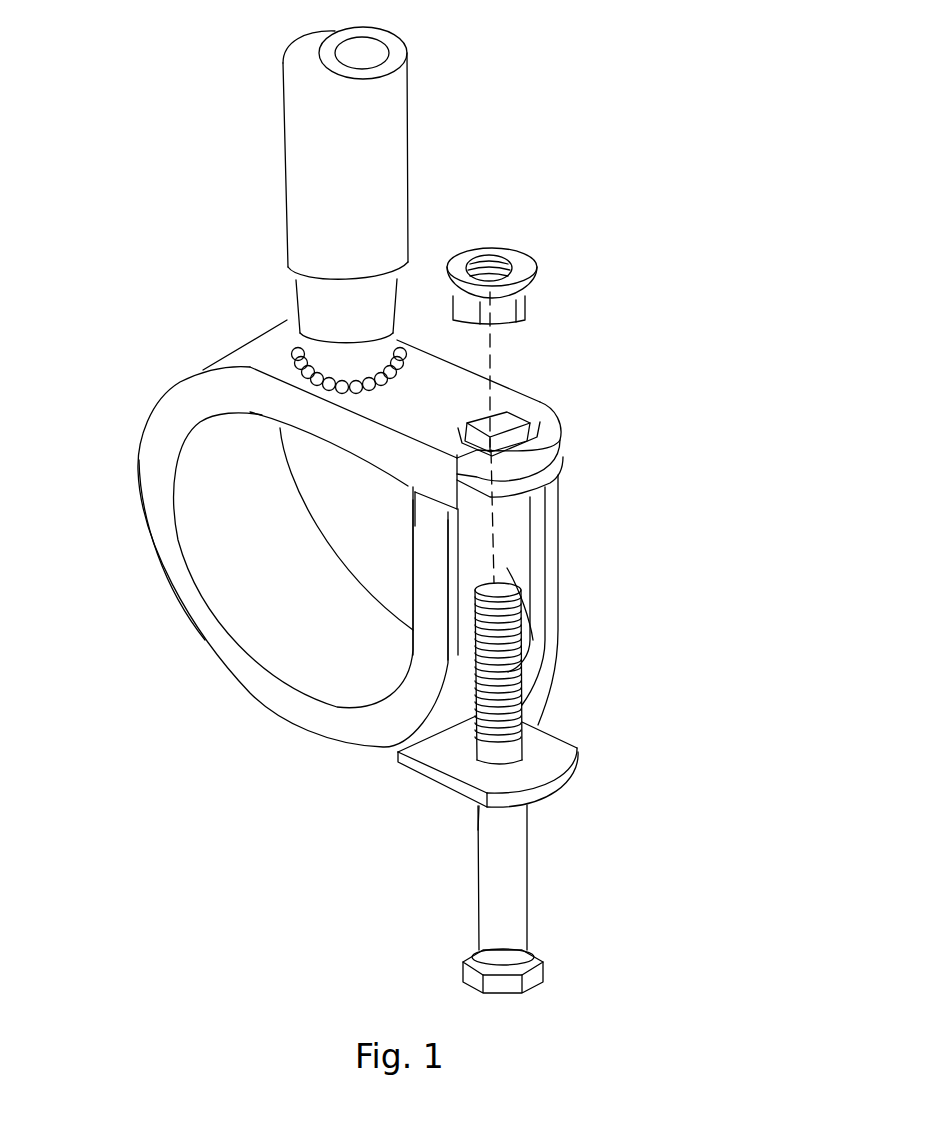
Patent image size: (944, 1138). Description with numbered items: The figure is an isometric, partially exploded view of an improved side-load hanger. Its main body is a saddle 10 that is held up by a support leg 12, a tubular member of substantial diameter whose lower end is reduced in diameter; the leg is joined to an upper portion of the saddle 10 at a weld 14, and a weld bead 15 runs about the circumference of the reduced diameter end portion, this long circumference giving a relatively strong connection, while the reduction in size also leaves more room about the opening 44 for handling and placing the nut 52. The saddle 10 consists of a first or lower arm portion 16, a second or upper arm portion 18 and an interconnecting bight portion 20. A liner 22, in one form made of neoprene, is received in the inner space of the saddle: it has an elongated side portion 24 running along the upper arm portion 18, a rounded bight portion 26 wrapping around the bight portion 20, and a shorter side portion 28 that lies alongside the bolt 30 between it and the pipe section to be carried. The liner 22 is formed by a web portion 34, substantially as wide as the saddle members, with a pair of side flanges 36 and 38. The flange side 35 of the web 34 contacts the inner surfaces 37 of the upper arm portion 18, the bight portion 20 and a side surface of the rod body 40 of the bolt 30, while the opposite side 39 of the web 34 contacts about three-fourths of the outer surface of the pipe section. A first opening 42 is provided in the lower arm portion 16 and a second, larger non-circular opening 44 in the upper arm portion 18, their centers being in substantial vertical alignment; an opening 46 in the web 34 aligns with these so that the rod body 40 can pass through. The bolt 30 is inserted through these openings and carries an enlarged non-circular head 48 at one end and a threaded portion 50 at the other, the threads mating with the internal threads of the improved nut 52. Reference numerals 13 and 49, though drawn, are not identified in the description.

The saddle 10 is at (185, 362).
The support leg 12 is at (283, 152).
The reduced neck of pipe stub 13 is at (299, 322).
The weld 14 is at (297, 350).
The weld bead 15 is at (398, 342).
The lower arm portion 16 is at (447, 768).
The upper arm portion 18 is at (430, 368).
The bight portion 20 is at (143, 481).
The liner 22 is at (193, 462).
The elongated side portion 24 is at (543, 470).
The rounded bight portion 26 is at (182, 592).
The shorter side portion 28 is at (553, 567).
The bolt 30 is at (527, 858).
The web portion 34 is at (512, 523).
The flange side 35 is at (533, 640).
The side flange 36 is at (422, 545).
The inner surfaces 37 is at (417, 740).
The side flange 38 is at (548, 586).
The opposite side 39 is at (287, 640).
The rod body 40 is at (478, 832).
The first opening 42 is at (527, 752).
The second non-circular opening 44 is at (530, 410).
The opening 46 is at (498, 447).
The head 48 is at (543, 950).
The washer face of bolt head 49 is at (476, 941).
The threaded portion 50 is at (520, 680).
The nut 52 is at (534, 247).